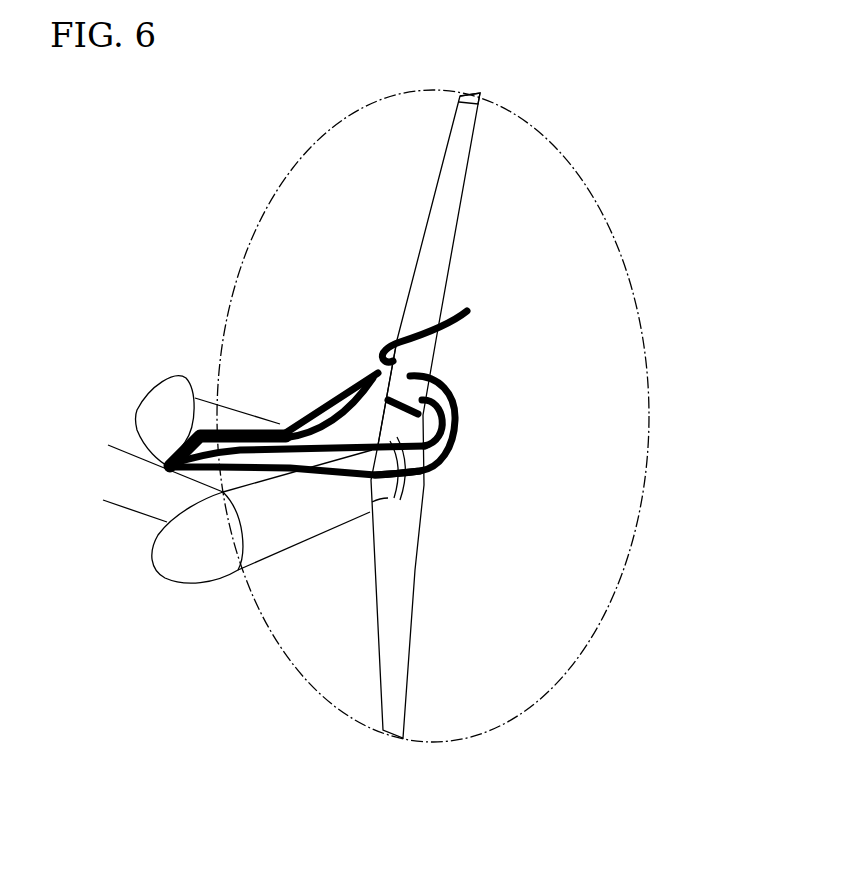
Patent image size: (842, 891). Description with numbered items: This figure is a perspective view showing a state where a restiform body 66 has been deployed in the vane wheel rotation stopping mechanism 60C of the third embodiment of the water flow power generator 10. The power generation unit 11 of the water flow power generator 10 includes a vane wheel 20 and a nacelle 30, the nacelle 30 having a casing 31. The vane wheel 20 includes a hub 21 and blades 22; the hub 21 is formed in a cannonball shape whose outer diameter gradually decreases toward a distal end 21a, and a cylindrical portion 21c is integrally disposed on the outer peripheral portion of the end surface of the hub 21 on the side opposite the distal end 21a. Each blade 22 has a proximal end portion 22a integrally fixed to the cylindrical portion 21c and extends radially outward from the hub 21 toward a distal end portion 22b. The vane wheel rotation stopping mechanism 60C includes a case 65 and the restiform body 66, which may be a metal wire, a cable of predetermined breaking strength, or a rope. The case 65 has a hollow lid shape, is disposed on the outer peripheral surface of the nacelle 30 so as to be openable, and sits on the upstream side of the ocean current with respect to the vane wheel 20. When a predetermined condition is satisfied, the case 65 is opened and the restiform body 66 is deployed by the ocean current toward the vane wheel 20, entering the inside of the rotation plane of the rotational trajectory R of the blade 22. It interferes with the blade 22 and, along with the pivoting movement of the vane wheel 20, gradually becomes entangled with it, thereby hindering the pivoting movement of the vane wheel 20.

The water flow power generator 10 is at (362, 391).
The power generation unit 11 is at (199, 597).
The vane wheel 20 is at (449, 324).
The hub 21 is at (356, 425).
The distal end 21a is at (472, 409).
The cylindrical portion 21c is at (465, 492).
The blade 22 is at (395, 399).
The proximal end portion 22a is at (338, 392).
The distal end portion 22b is at (398, 82).
The nacelle 30 is at (152, 483).
The casing 31 is at (314, 535).
The vane wheel rotation stopping mechanism 60C is at (245, 353).
The case 65 is at (198, 384).
The restiform body 66 is at (269, 384).
The rotational trajectory R is at (396, 416).